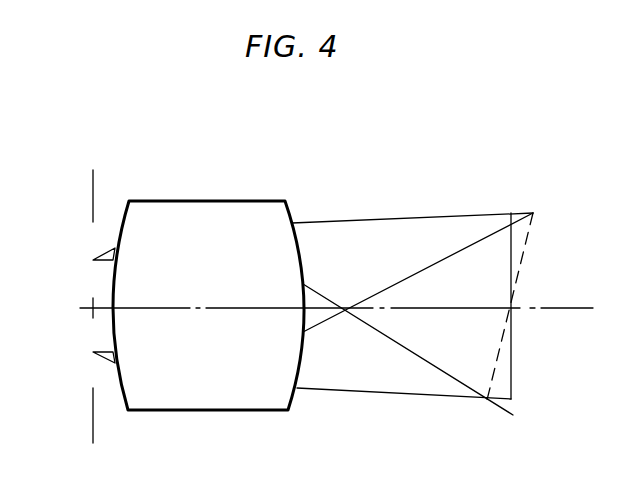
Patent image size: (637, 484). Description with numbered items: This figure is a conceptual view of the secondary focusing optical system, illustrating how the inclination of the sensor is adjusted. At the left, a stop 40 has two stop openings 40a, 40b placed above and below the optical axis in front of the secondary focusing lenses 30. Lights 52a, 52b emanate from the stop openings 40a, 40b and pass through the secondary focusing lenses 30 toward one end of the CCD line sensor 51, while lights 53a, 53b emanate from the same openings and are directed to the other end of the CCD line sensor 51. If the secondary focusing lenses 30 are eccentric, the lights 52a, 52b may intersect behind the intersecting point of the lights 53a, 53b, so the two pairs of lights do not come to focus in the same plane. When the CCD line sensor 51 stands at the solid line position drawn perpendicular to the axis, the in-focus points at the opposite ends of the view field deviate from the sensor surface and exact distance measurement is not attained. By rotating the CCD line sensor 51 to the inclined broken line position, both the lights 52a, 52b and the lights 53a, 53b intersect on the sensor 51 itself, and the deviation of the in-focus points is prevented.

The secondary focusing lenses 30 is at (200, 410).
The stop 40 is at (92, 185).
The stop opening 40a is at (92, 245).
The stop opening 40b is at (92, 365).
The CCD line sensor 51 is at (512, 268).
The light 52a is at (113, 246).
The light 52b is at (100, 351).
The light 53a is at (104, 263).
The light 53b is at (108, 364).